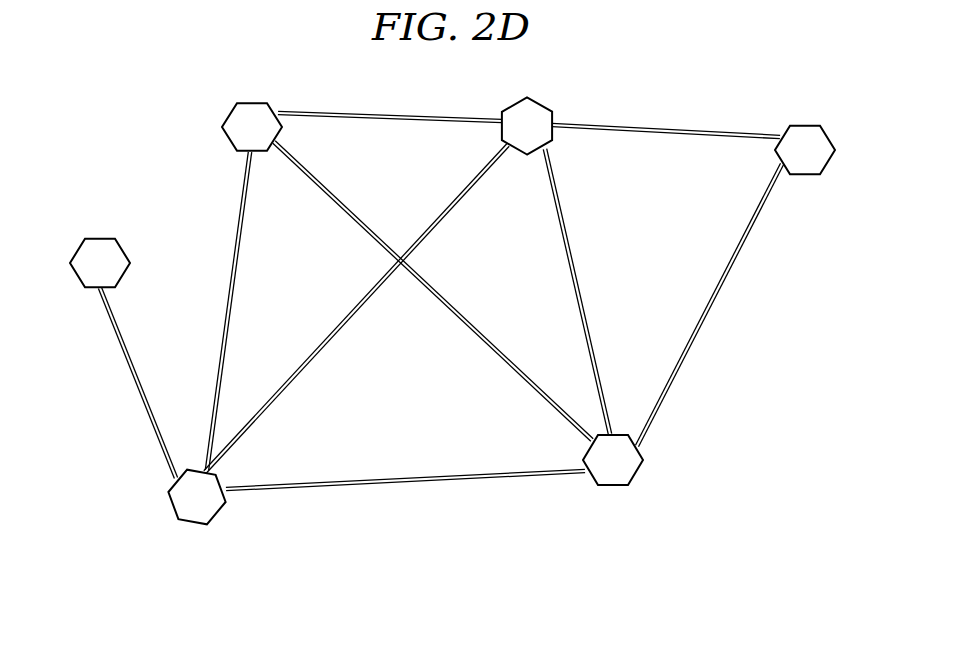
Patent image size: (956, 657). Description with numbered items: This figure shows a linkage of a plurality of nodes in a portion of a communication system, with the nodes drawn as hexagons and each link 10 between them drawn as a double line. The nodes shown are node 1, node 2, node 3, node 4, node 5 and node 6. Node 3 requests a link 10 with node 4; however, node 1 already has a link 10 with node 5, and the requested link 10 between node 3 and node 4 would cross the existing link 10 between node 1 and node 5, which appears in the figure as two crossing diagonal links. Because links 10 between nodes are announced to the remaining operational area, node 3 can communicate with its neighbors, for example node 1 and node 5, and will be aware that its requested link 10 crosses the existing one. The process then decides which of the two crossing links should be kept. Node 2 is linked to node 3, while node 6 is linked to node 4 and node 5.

The link 10 is at (388, 117).
The node 1 is at (252, 127).
The node 2 is at (100, 263).
The node 3 is at (196, 497).
The node 4 is at (527, 126).
The node 5 is at (613, 460).
The node 6 is at (805, 150).